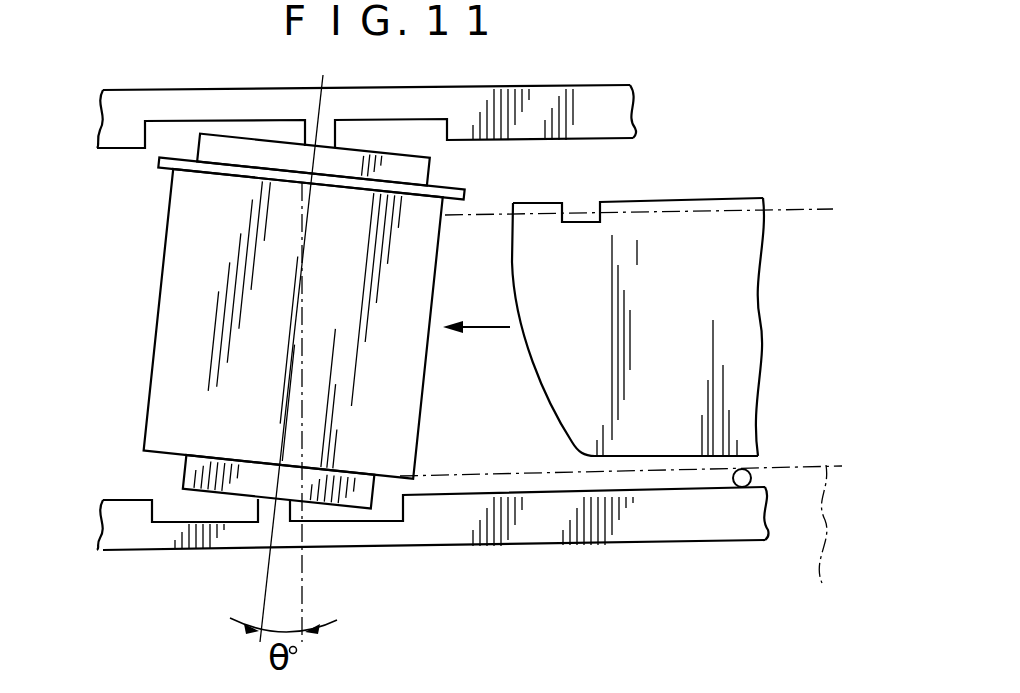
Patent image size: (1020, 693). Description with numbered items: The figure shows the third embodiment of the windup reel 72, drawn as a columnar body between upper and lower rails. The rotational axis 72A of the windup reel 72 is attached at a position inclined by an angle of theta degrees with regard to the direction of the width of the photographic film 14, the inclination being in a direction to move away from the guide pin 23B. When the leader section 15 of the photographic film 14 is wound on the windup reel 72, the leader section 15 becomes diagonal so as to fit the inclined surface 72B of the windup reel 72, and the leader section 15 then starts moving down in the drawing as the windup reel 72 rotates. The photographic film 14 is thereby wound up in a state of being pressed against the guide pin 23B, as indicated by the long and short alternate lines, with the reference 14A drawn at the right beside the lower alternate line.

The photographic film 14 is at (677, 248).
The reference position of mirror holder 14A is at (835, 546).
The leader section 15 is at (563, 403).
The guide pin 23B is at (737, 485).
The windup reel 72 is at (192, 349).
The rotational axis 72A is at (263, 575).
The inclined surface 72B is at (165, 273).